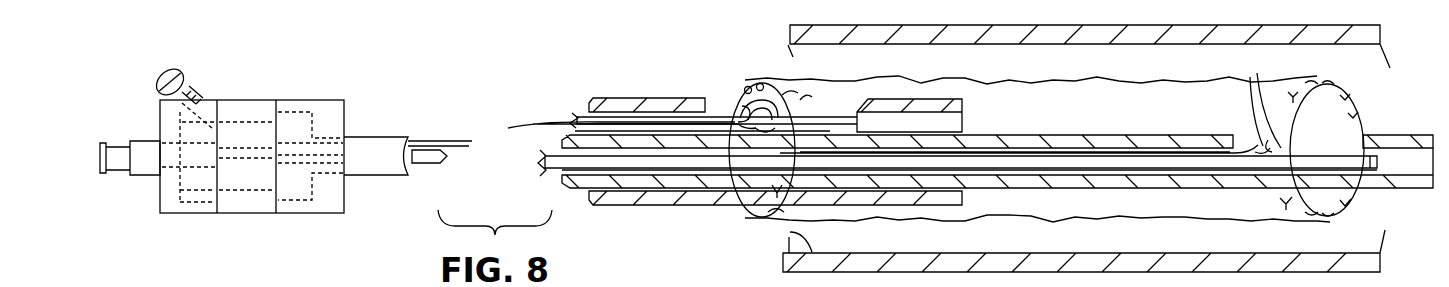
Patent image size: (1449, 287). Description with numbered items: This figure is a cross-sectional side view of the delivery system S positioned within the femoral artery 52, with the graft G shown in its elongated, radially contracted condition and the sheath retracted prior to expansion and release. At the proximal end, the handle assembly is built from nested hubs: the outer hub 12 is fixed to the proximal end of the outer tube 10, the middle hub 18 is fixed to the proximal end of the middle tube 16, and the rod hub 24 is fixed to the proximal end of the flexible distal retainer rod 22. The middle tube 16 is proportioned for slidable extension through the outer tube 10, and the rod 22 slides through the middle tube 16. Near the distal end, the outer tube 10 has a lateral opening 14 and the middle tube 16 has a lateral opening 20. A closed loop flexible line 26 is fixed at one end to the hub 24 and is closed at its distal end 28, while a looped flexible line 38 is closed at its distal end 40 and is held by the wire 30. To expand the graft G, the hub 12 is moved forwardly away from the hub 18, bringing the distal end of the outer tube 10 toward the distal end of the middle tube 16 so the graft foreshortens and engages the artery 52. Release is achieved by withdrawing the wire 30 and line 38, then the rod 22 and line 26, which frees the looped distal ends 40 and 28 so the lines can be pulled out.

The outer tube 10 is at (384, 160).
The outer hub 12 is at (315, 213).
The lateral opening 14 is at (703, 97).
The middle tube 16 is at (1398, 188).
The middle hub 18 is at (243, 213).
The lateral opening 20 is at (1243, 140).
The flexible distal retainer rod 22 is at (1380, 158).
The rod hub 24 is at (190, 213).
The closed loop flexible line 26 is at (1250, 77).
The distal end 28 is at (1307, 178).
The wire 30 is at (832, 120).
The looped flexible line 38 is at (733, 110).
The distal end 40 is at (768, 110).
The femoral artery 52 is at (790, 232).
The stent delivery system S is at (306, 81).
The graft G is at (1104, 72).